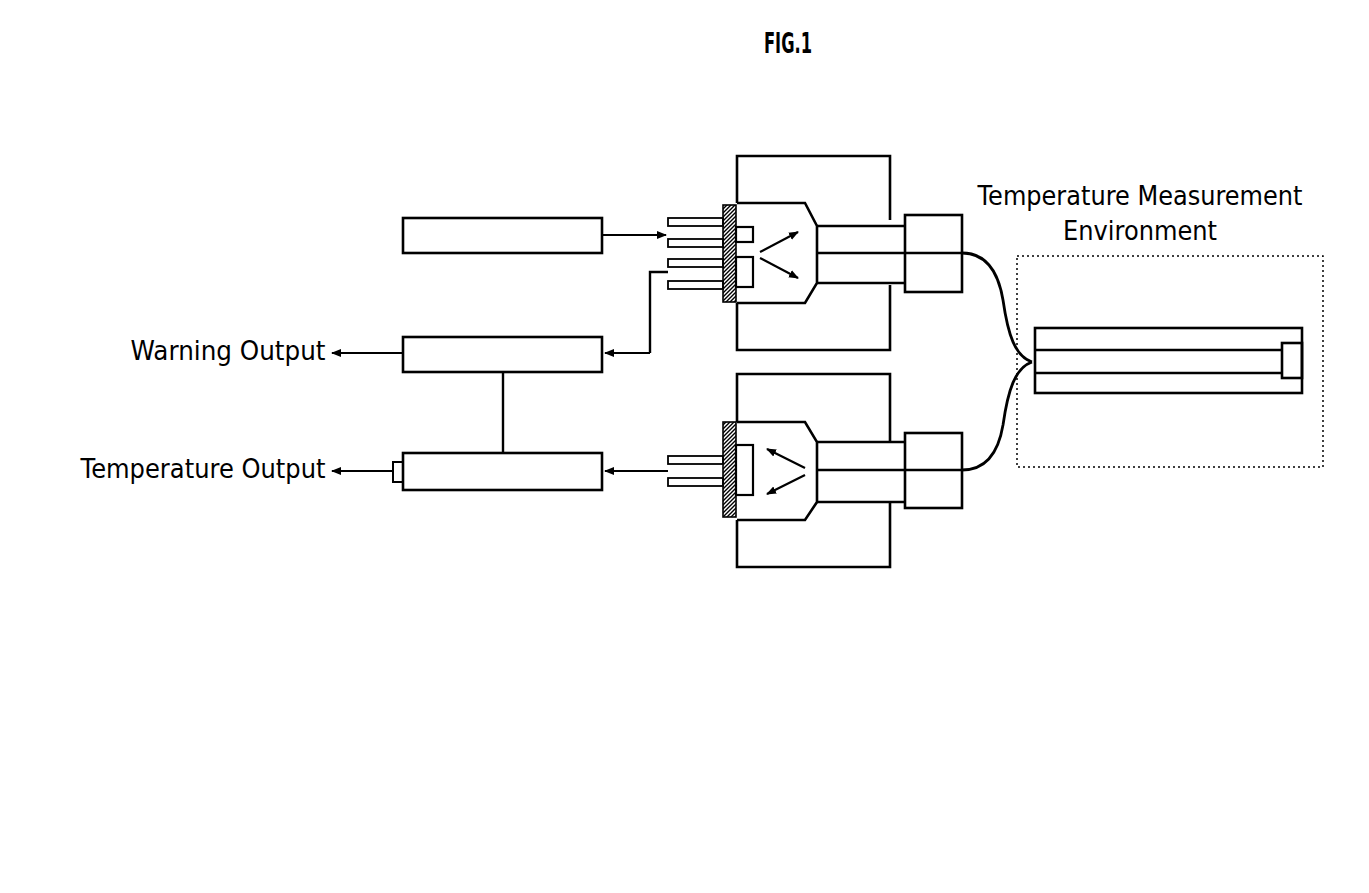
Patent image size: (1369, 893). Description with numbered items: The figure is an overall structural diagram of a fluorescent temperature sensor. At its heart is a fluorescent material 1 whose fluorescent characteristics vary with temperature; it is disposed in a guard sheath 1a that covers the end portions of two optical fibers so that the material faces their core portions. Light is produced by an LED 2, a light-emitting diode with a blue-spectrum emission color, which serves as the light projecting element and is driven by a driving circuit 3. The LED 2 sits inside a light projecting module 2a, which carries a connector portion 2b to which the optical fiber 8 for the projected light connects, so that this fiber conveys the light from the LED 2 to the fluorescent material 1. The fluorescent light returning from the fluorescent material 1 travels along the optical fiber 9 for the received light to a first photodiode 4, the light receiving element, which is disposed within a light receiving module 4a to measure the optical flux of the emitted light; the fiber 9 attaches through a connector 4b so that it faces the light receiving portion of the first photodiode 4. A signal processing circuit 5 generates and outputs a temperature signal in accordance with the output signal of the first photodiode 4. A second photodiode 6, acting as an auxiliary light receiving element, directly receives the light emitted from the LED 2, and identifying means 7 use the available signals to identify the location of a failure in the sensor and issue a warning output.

The fluorescent material 1 is at (1305, 356).
The guard sheath 1a is at (1263, 327).
The LED 2 is at (748, 216).
The light projecting module 2a is at (781, 203).
The connector portion 2b is at (886, 227).
The driving circuit 3 is at (573, 217).
The first photodiode 4 is at (748, 490).
The light receiving module 4a is at (781, 522).
The connector 4b is at (885, 500).
The signal processing circuit 5 is at (573, 453).
The second photodiode 6 is at (747, 292).
The identifying means 7 is at (573, 336).
The optical fiber for projected light 8 is at (1000, 270).
The optical fiber for received light 9 is at (1000, 455).